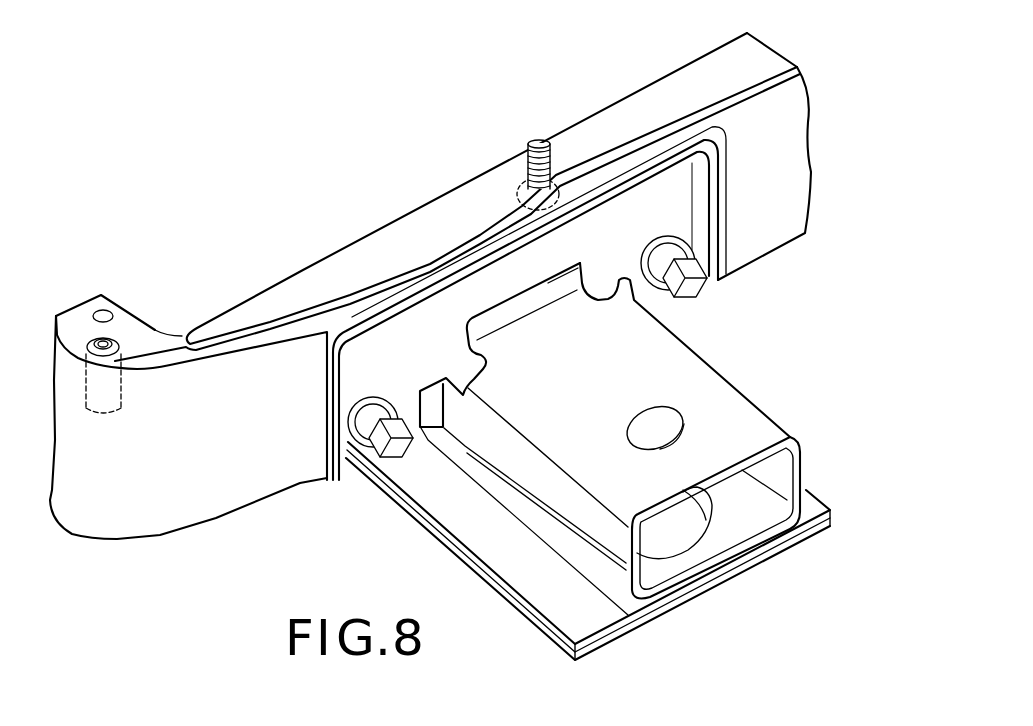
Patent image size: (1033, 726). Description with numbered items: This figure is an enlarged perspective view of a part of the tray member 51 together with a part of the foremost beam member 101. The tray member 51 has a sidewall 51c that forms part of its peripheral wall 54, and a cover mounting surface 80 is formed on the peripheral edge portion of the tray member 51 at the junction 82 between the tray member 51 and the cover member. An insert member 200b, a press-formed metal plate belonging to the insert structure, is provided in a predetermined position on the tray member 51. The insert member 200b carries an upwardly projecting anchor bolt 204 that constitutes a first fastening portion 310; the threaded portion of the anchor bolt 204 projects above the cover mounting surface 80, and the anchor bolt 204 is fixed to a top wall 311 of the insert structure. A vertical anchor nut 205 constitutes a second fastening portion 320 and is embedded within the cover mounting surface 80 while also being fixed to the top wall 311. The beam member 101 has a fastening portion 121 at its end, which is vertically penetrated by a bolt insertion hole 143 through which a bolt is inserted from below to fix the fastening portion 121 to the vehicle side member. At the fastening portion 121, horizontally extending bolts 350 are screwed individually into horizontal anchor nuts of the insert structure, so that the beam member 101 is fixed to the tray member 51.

The tray member 51 is at (216, 527).
The sidewall 51c is at (777, 185).
The peripheral wall 54 is at (814, 115).
The cover mounting surface 80 is at (760, 63).
The junction 82 is at (406, 233).
The foremost beam member 101 is at (532, 573).
The fastening portion 121 is at (717, 385).
The bolt insertion hole 143 is at (683, 424).
The insert member 200b is at (283, 277).
The anchor bolt 204 is at (553, 152).
The anchor nut 205 is at (96, 340).
The first fastening portion 310 is at (547, 106).
The top wall 311 is at (656, 110).
The second fastening portion 320 is at (127, 306).
The bolt 350 is at (690, 286).